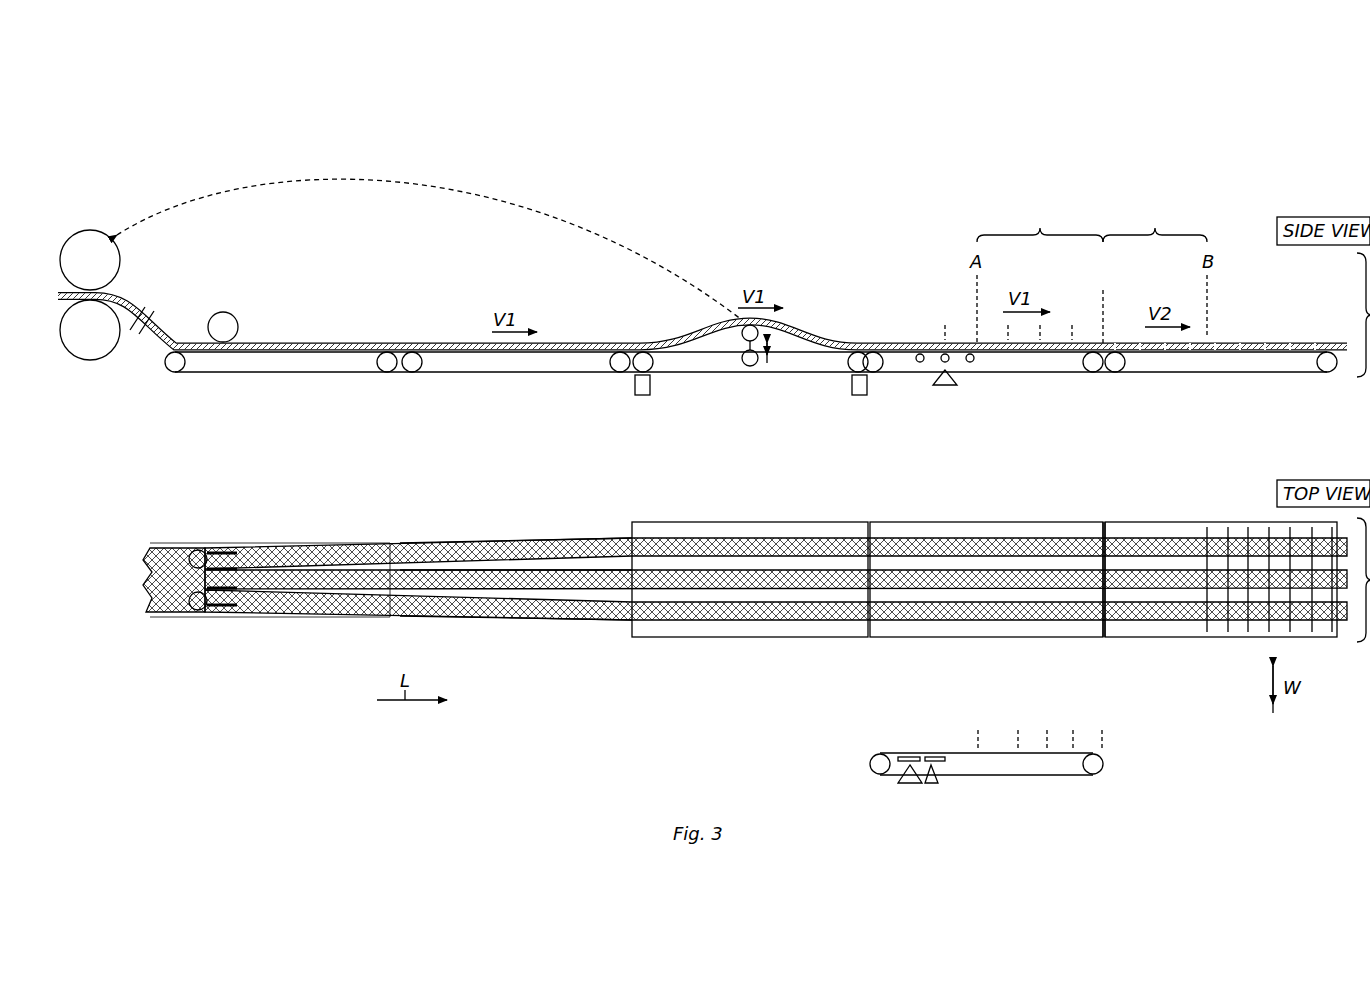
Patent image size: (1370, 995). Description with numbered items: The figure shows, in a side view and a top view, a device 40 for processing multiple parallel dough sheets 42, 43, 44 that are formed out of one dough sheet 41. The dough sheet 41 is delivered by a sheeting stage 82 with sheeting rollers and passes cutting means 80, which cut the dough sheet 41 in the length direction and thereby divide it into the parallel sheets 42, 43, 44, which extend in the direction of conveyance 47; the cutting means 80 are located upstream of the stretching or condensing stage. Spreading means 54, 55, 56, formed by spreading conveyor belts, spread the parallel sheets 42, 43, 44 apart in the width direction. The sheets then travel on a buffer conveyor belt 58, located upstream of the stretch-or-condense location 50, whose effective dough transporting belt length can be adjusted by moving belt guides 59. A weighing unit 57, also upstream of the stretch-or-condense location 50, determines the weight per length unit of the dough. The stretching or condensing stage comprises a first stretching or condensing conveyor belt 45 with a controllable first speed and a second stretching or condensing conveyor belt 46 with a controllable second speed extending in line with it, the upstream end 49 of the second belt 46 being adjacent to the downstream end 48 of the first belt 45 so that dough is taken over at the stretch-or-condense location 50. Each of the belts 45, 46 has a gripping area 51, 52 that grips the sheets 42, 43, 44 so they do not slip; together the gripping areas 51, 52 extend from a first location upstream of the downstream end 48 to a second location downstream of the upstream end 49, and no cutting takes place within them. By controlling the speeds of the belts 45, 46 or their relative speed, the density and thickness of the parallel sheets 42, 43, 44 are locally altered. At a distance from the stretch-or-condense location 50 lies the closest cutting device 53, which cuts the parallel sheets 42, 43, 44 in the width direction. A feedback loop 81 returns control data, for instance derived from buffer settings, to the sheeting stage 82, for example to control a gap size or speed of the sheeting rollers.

The device 40 is at (1284, 128).
The dough sheet 41 is at (178, 336).
The parallel dough sheet 42 is at (402, 340).
The parallel dough sheet 43 is at (355, 580).
The parallel dough sheet 44 is at (315, 600).
The first stretching or condensing conveyor belt 45 is at (1025, 364).
The second stretching or condensing conveyor belt 46 is at (1220, 364).
The direction of conveyance 47 is at (743, 683).
The downstream end of the first stretching or condensing conveyor belt 48 is at (1099, 340).
The upstream end of the second stretching or condensing conveyor belt 49 is at (1109, 340).
The stretch-or-condense location 50 is at (1105, 380).
The gripping area 51 is at (1040, 223).
The gripping area 52 is at (1155, 223).
The cutting device 53 is at (1215, 288).
The spreading means 54 is at (485, 541).
The spreading means 55 is at (527, 569).
The spreading means 56 is at (502, 621).
The weighing unit 57 is at (945, 392).
The buffer conveyor belt 58 is at (710, 374).
The moving belt guides 59 is at (742, 335).
The cutting means 80 is at (236, 320).
The feedback loop 81 is at (382, 180).
The sheeting stage 82 is at (190, 340).